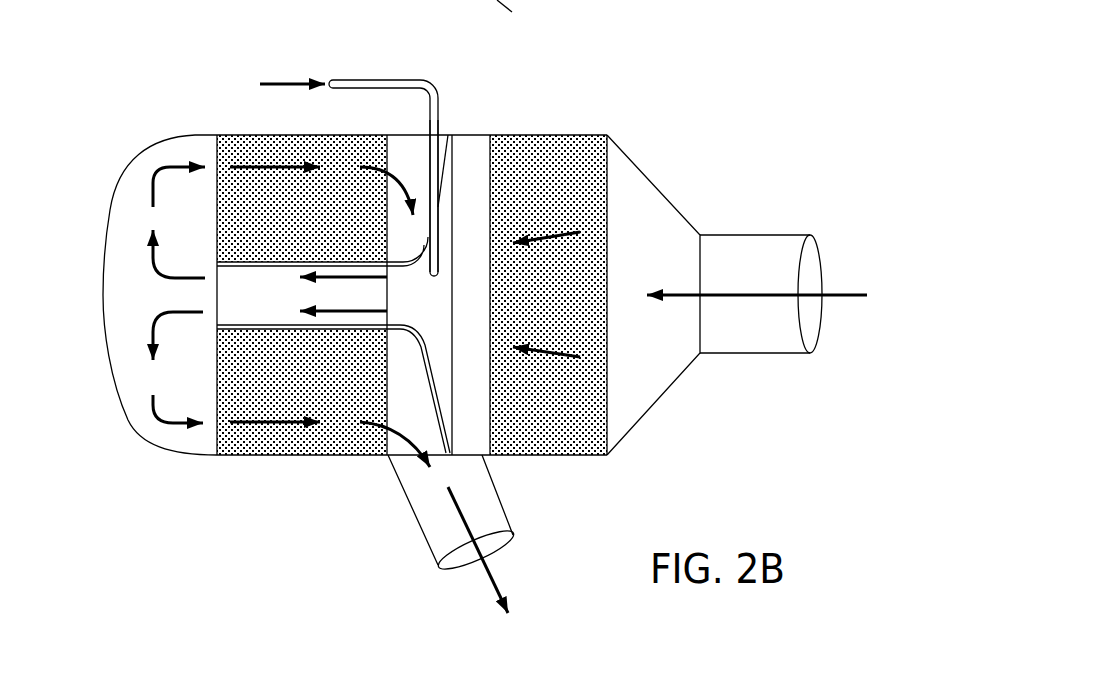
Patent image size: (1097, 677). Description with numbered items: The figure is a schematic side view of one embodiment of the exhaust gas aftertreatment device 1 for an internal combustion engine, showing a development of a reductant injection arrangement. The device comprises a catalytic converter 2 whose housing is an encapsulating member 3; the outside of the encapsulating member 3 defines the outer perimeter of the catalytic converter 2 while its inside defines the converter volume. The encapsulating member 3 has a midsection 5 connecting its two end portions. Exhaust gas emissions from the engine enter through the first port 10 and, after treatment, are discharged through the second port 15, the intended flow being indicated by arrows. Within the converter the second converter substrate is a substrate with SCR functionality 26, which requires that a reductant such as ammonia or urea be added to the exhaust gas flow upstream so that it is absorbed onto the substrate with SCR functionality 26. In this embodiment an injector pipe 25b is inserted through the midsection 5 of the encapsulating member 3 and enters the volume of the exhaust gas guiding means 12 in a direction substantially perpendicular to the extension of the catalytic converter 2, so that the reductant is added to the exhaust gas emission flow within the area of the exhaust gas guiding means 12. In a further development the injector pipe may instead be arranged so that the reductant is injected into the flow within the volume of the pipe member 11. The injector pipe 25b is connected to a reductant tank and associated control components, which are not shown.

The exhaust gas aftertreatment device 1 is at (172, 50).
The catalytic converter 2 is at (148, 147).
The encapsulating member 3 is at (655, 173).
The midsection 5 is at (405, 133).
The injector pipe 25b is at (440, 118).
The substrate with SCR functionality 26 is at (316, 228).
The exhaust gas guiding means 12 is at (444, 310).
The pipe member 11 is at (278, 318).
The second port 15 is at (420, 528).
The first port 10 is at (752, 235).